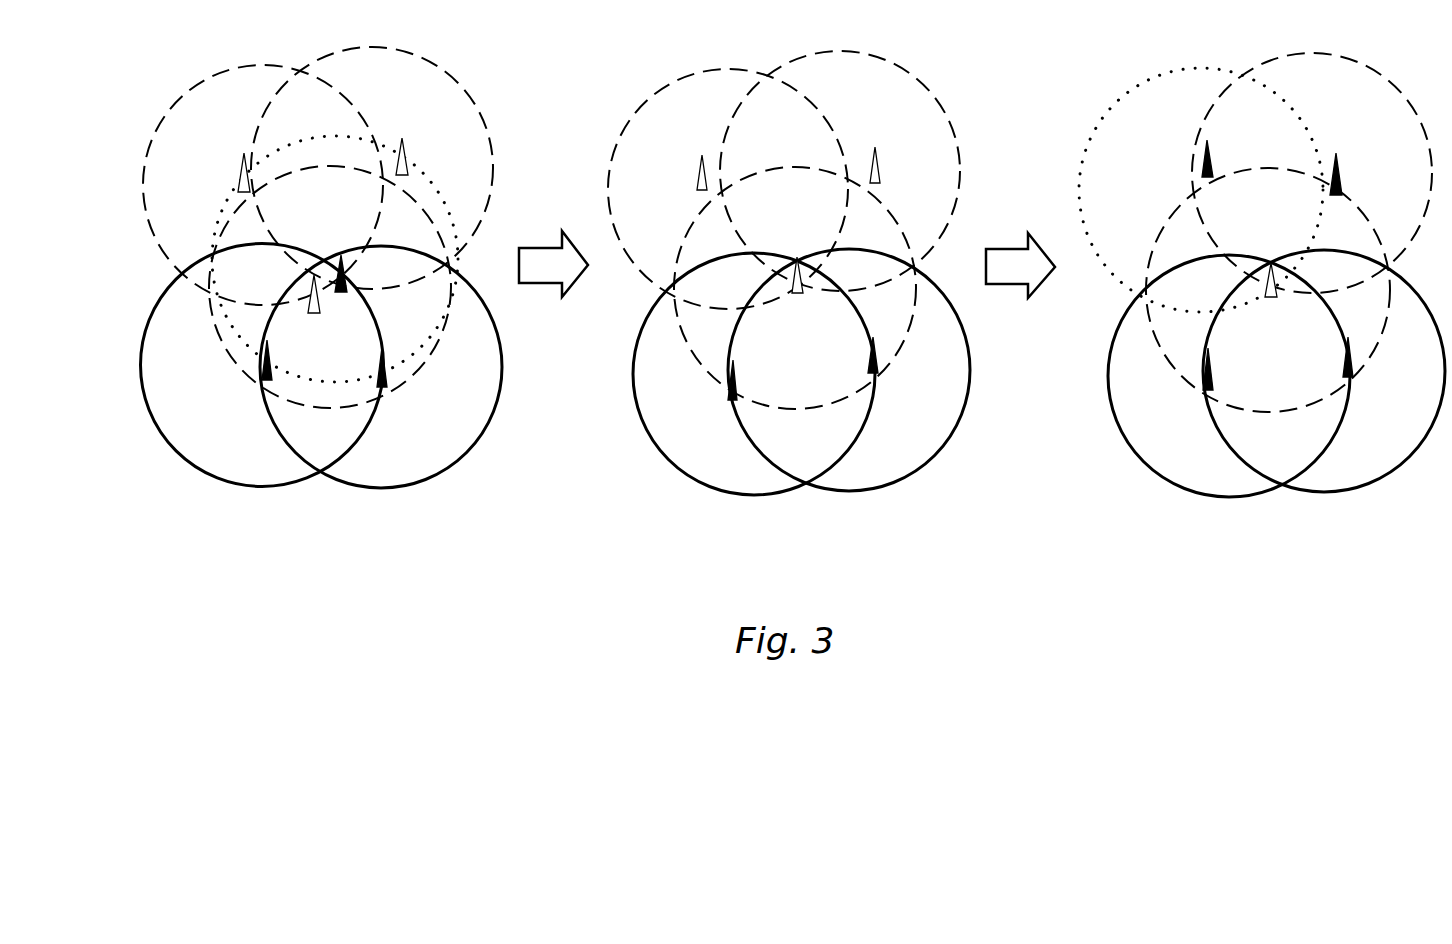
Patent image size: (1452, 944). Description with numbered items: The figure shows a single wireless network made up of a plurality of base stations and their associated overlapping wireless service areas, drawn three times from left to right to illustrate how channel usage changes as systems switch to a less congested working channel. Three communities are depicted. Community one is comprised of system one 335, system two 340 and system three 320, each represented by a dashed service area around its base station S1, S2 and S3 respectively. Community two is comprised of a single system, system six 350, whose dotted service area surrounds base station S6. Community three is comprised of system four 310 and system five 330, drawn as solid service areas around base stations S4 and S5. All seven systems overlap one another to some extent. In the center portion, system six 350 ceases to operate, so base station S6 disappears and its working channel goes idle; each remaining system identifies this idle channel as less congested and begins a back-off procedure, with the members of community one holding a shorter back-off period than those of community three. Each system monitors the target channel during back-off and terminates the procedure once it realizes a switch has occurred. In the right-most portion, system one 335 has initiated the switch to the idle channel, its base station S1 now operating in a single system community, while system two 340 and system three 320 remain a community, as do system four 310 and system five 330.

The system 4 310 is at (203, 467).
The system 3 320 is at (228, 352).
The system 5 330 is at (455, 468).
The system 1 335 is at (175, 108).
The system 2 340 is at (460, 91).
The system 6 350 is at (233, 328).
The base station S1 is at (728, 150).
The base station S2 is at (882, 148).
The base station S3 is at (306, 282).
The base station S4 is at (721, 384).
The base station S5 is at (882, 382).
The base station S6 is at (364, 275).